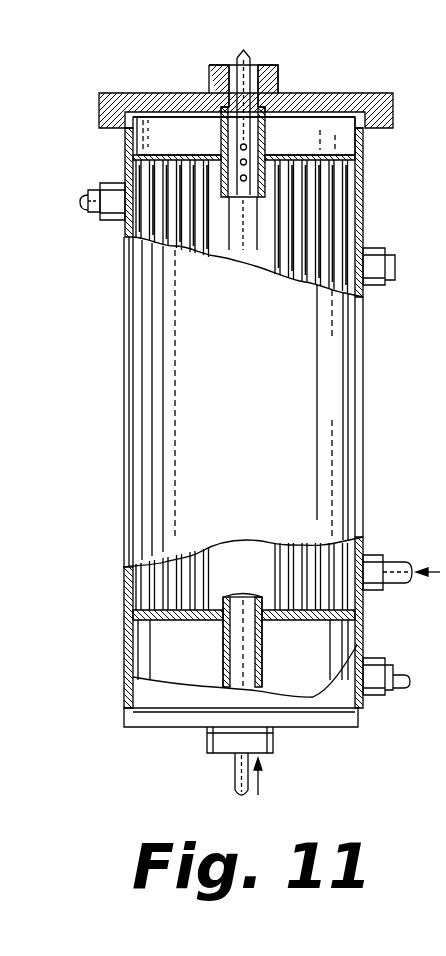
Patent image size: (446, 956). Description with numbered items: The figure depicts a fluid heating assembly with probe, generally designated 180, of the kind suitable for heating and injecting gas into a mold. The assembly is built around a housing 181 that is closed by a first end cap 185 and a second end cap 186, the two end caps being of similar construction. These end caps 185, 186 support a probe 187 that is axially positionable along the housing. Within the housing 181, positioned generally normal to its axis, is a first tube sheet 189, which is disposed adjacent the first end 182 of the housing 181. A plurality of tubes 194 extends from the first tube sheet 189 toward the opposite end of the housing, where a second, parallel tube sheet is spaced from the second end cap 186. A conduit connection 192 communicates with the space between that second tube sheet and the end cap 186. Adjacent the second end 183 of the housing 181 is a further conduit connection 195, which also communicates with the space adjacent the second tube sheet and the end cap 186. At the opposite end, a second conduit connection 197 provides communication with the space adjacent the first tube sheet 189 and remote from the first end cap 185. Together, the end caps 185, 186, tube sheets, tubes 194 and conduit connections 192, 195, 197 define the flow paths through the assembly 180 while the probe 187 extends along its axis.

The fluid heating assembly with probe 180 is at (84, 116).
The housing 181 is at (362, 375).
The first end of the housing 182 is at (365, 133).
The second end of the housing 183 is at (350, 697).
The first end cap 185 is at (163, 100).
The second end cap 186 is at (307, 718).
The probe 187 is at (240, 778).
The first tube sheet 189 is at (152, 157).
The conduit connection 192 is at (393, 672).
The tubes 194 is at (315, 207).
The conduit connection 195 is at (393, 565).
The second conduit connection 197 is at (118, 207).